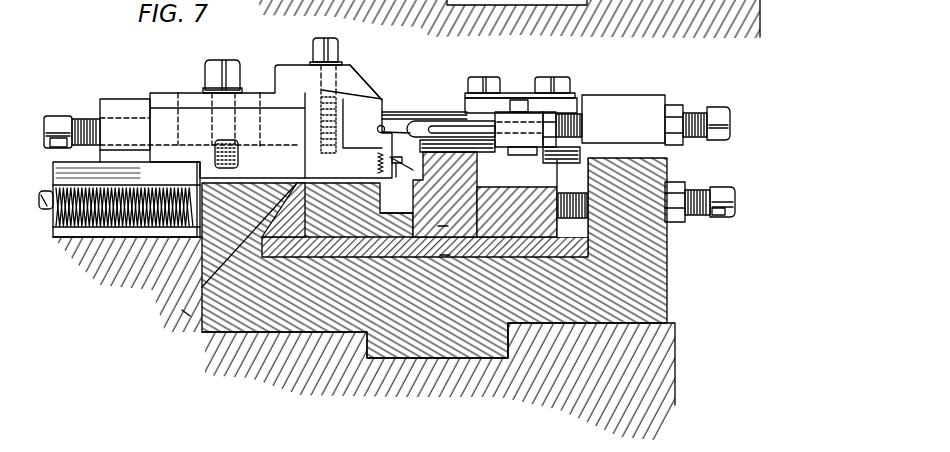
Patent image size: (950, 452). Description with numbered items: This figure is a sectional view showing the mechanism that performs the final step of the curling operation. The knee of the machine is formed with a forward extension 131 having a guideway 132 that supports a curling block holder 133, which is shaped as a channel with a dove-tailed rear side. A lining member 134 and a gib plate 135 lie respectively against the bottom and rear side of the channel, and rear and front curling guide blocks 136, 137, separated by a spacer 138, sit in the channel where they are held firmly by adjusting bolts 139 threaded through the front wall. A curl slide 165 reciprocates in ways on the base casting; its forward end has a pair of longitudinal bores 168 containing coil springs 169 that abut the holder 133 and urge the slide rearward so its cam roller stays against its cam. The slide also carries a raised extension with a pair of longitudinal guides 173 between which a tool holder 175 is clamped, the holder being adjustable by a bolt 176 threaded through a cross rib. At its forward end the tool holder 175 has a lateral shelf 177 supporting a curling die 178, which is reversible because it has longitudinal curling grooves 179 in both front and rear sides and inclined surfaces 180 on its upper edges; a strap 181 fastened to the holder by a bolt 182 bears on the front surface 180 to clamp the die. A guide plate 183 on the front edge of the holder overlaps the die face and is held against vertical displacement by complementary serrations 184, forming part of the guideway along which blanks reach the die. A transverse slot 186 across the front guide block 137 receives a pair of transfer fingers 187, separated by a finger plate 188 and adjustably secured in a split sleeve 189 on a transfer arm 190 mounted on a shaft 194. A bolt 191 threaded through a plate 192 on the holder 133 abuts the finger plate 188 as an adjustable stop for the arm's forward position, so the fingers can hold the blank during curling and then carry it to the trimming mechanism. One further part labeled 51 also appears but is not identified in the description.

The block 51 is at (527, 192).
The forward extension 131 is at (665, 388).
The guideway 132 is at (510, 338).
The curling block holder 133 is at (660, 287).
The lining member 134 is at (443, 227).
The gib plate 135 is at (185, 313).
The rear curling guide block 136 is at (310, 245).
The front curling guide block 137 is at (445, 255).
The spacer 138 is at (392, 218).
The adjusting bolt 139 is at (718, 216).
The curl slide 165 is at (118, 105).
The longitudinal bore 168 is at (67, 235).
The coil spring 169 is at (143, 230).
The longitudinal guide 173 is at (246, 114).
The tool holder 175 is at (186, 91).
The bolt 176 is at (59, 117).
The lateral shelf 177 is at (318, 162).
The curling die 178 is at (383, 114).
The longitudinal curling groove 179 is at (345, 124).
The inclined surface 180 is at (381, 90).
The strap 181 is at (348, 80).
The bolt 182 is at (334, 51).
The guide plate 183 is at (397, 164).
The complementary serrations 184 is at (377, 163).
The transverse slot 186 is at (455, 148).
The transfer finger 187 is at (437, 119).
The finger plate 188 is at (476, 128).
The split sleeve 189 is at (538, 113).
The transfer arm 190 is at (522, 100).
The bolt 191 is at (727, 118).
The plate 192 is at (648, 102).
The shaft 194 is at (463, 96).